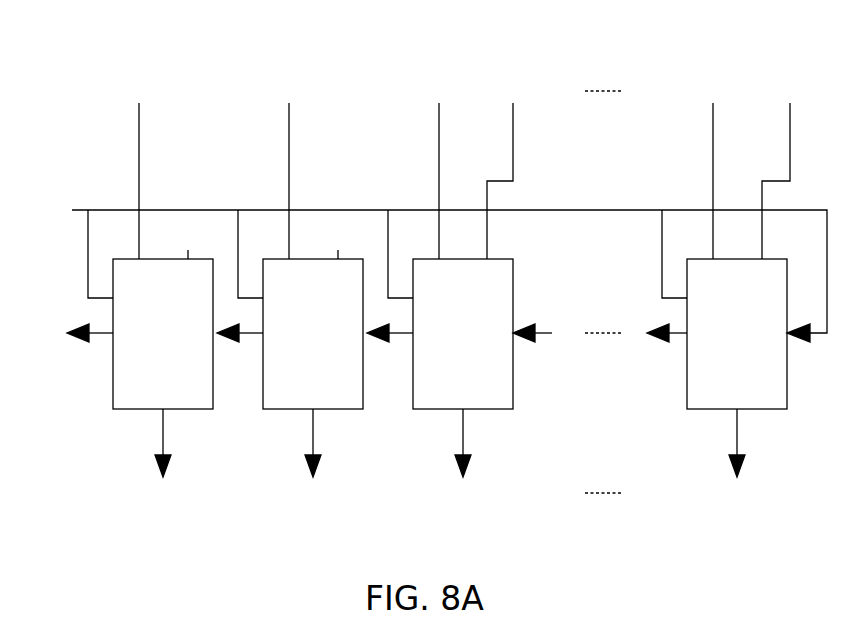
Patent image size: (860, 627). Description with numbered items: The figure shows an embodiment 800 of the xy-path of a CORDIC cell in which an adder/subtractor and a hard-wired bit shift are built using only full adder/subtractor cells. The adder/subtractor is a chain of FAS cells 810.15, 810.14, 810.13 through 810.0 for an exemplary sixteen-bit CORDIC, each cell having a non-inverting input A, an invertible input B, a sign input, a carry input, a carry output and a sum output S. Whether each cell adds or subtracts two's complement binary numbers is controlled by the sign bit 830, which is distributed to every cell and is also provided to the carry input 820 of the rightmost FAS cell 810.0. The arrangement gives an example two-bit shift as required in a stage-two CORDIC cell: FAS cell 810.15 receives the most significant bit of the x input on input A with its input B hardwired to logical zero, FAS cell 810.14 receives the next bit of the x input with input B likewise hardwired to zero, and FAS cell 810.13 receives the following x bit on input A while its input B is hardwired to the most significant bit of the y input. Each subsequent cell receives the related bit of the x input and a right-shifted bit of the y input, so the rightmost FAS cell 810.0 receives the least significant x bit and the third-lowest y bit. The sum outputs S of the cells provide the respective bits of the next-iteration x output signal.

The embodiment of xy-path 800 is at (105, 55).
The FAS cell 810.15 is at (132, 373).
The FAS cell 810.14 is at (282, 373).
The FAS cell 810.13 is at (432, 373).
The FAS cell 810.0 is at (711, 373).
The carry input 820 is at (800, 340).
The sign bit σ(i) 830 is at (32, 225).